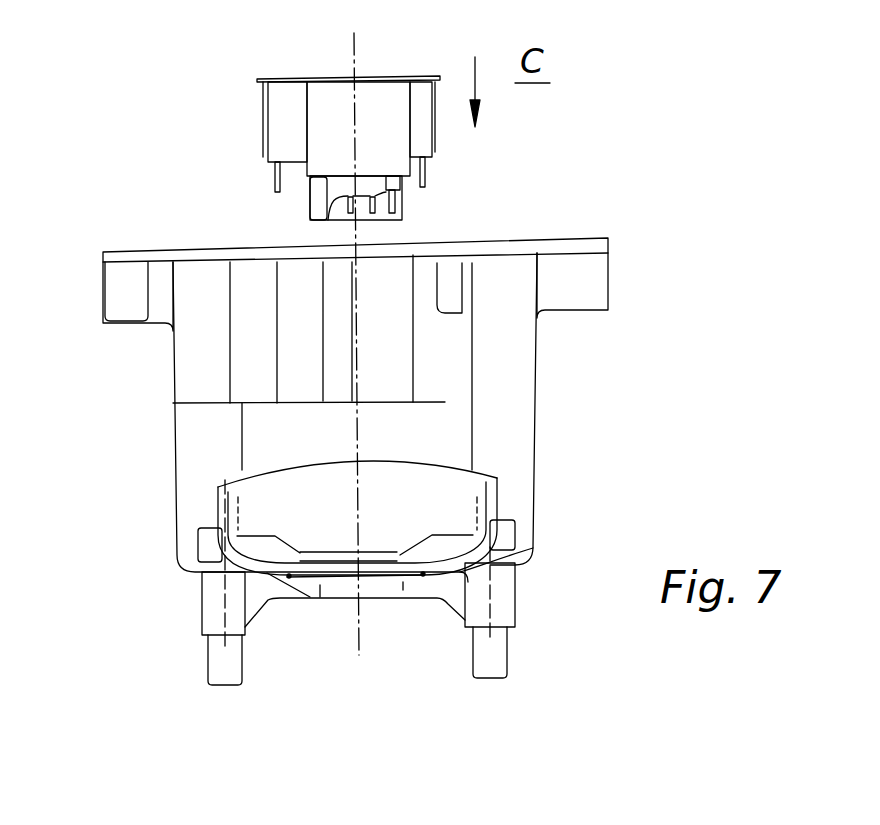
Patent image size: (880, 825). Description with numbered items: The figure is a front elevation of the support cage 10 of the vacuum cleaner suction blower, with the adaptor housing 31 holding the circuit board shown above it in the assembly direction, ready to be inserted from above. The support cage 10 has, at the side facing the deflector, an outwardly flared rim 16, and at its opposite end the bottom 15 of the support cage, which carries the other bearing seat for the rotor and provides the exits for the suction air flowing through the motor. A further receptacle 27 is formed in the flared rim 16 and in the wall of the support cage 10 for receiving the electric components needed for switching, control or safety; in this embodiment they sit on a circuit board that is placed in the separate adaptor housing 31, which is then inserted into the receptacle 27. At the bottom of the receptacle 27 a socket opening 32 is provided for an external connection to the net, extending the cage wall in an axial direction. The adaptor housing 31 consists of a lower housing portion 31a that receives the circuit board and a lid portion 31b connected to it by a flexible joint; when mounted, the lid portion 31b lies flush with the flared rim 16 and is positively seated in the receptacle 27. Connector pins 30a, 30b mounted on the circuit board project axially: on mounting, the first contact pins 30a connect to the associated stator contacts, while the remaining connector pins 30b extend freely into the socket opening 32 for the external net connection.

The support cage 10 is at (535, 463).
The bottom of the support cage 15 is at (448, 587).
The flared rim 16 is at (588, 245).
The receptacle 27 is at (297, 378).
The contact pins 30a is at (273, 182).
The connector pins 30b is at (400, 208).
The adaptor housing 31 is at (433, 150).
The lower housing portion 31a is at (290, 128).
The lid portion 31b is at (283, 78).
The socket opening 32 is at (293, 423).